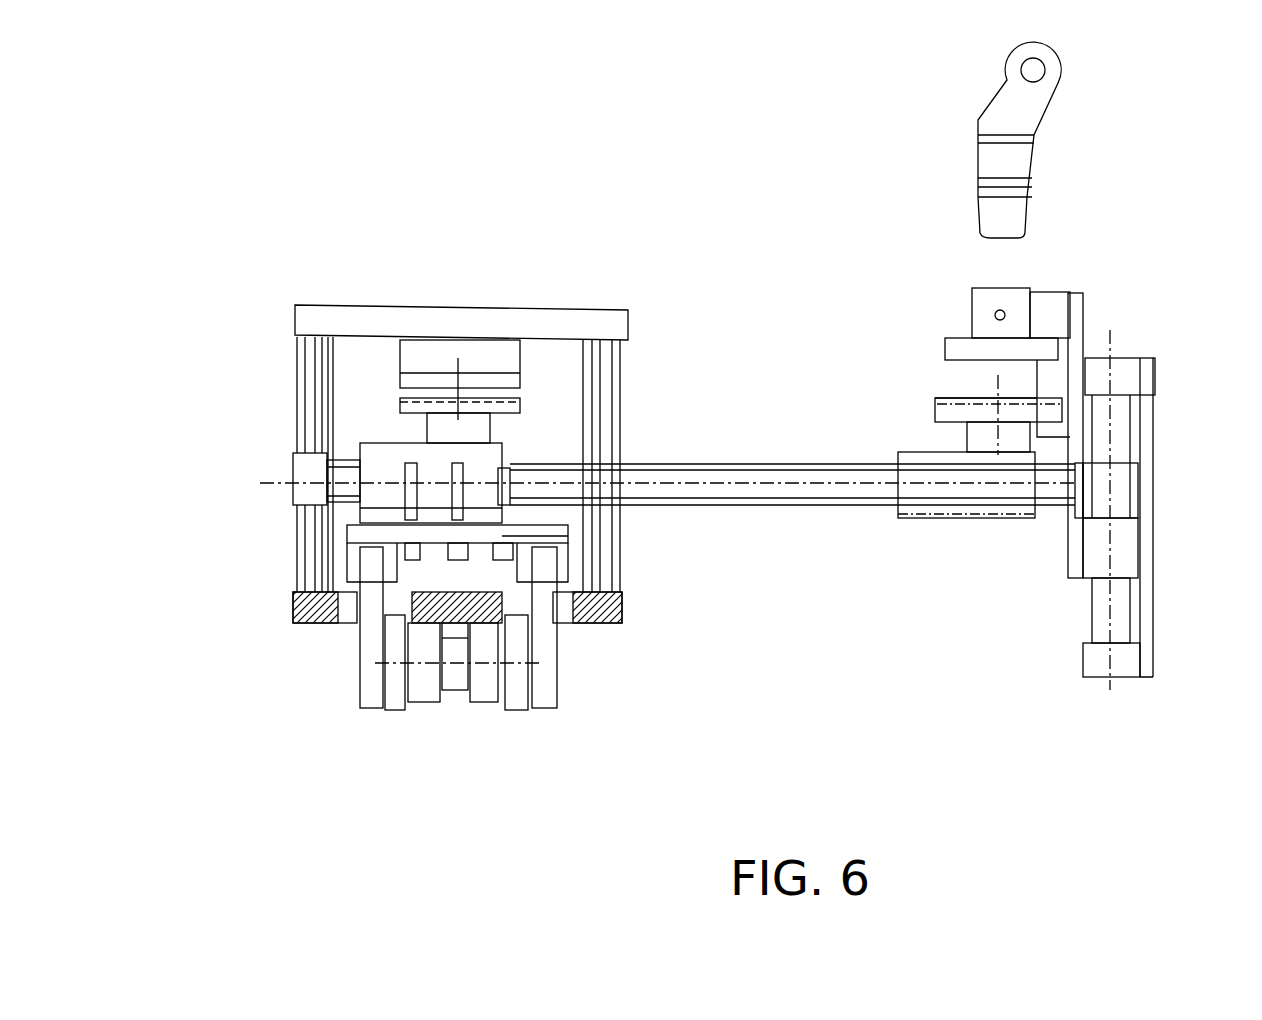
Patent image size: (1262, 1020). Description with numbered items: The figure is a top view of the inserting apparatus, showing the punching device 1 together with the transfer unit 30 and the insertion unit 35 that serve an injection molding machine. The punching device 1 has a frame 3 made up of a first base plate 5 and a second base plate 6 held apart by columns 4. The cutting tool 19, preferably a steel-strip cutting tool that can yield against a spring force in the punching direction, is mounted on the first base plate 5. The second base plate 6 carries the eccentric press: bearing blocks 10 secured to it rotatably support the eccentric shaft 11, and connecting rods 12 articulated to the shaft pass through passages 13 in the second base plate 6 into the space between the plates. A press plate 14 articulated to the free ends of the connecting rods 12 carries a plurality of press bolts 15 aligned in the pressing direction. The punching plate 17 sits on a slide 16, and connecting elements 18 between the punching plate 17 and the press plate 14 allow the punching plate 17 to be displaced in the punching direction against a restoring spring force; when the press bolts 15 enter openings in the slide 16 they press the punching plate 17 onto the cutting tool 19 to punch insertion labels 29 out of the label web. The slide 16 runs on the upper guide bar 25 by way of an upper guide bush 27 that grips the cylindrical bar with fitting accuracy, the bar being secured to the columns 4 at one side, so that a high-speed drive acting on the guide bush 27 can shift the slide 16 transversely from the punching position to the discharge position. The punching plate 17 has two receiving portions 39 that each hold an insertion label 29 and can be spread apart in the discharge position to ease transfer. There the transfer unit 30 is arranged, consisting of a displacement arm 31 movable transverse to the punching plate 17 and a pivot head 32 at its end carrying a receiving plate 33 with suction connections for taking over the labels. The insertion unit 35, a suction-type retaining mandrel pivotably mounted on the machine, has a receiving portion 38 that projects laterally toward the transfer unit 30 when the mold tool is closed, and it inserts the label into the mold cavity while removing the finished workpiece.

The punching device 1 is at (287, 652).
The frame 3 is at (273, 522).
The columns 4 is at (318, 368).
The first base plate 5 is at (363, 318).
The second base plate 6 is at (307, 607).
The bearing blocks 10 is at (428, 685).
The eccentric shaft 11 is at (457, 678).
The connecting rods 12 is at (370, 690).
The passages 13 is at (350, 612).
The press plate 14 is at (502, 536).
The press bolts 15 is at (365, 520).
The slide 16 is at (382, 445).
The punching plate 17 is at (522, 403).
The connecting elements 18 is at (478, 427).
The cutting tool 19 is at (487, 357).
The upper guide bar 25 is at (802, 498).
The upper guide bush 27 is at (365, 460).
The insertion labels 29 is at (950, 393).
The transfer unit 30 is at (1118, 320).
The displacement arm 31 is at (1058, 295).
The pivot head 32 is at (1018, 297).
The receiving plate 33 is at (960, 345).
The insertion unit 35 is at (1062, 127).
The receiving portion 38 is at (987, 217).
The receiving portions 39 is at (938, 408).